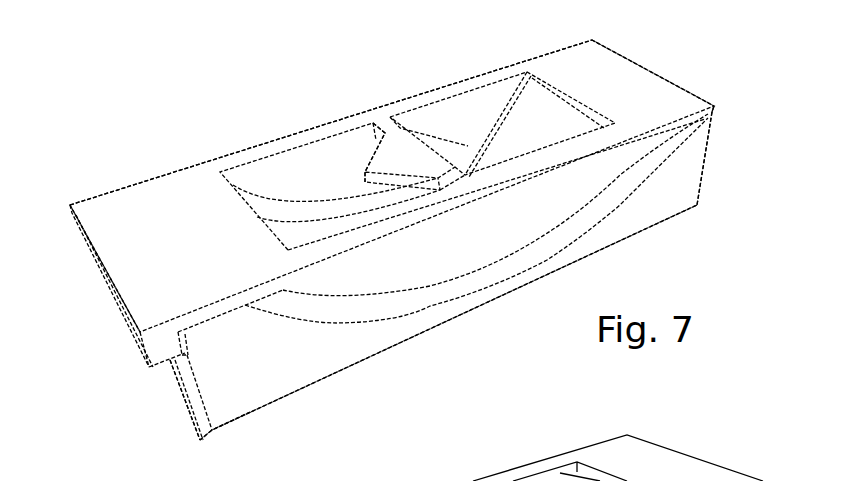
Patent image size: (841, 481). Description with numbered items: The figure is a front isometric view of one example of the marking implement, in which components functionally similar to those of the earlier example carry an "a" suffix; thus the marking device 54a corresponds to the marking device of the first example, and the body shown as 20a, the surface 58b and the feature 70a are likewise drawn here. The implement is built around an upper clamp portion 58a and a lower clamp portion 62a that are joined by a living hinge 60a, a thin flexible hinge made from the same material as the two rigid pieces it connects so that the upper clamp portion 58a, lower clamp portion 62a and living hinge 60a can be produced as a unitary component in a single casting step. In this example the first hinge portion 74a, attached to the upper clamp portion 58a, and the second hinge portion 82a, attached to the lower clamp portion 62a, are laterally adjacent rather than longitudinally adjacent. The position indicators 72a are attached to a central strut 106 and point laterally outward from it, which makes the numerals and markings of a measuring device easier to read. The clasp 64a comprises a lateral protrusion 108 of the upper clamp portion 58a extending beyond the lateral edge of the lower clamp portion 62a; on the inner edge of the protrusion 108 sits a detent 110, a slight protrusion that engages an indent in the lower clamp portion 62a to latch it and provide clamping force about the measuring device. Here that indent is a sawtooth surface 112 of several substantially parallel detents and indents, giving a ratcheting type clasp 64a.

The insert body 20a is at (113, 153).
The upper clamp portion 58a is at (543, 58).
The top surface of second insert 58b is at (573, 453).
The first hinge portion 74a is at (645, 72).
The living hinge 60a is at (714, 108).
The second hinge portion 82a is at (712, 118).
The lower clamp portion 62a is at (677, 213).
The lateral protrusion 108 is at (95, 265).
The detent 110 is at (182, 348).
The sawtooth surface 112 is at (186, 343).
The clasp 64a is at (153, 403).
The marking device 54a is at (203, 438).
The central strut 106 is at (457, 178).
The pocket 70a is at (270, 170).
The position indicators 72a is at (468, 133).